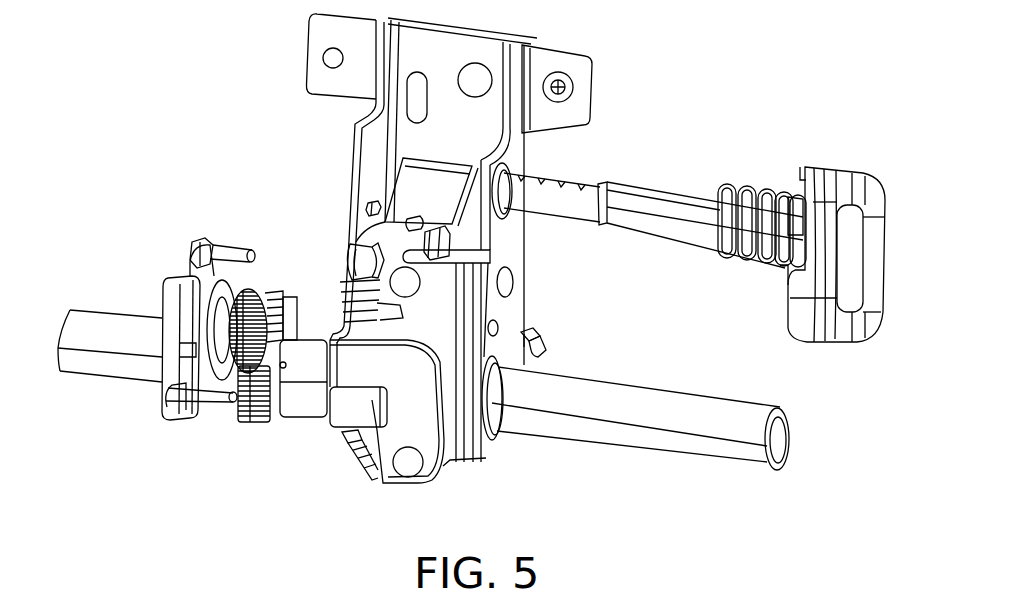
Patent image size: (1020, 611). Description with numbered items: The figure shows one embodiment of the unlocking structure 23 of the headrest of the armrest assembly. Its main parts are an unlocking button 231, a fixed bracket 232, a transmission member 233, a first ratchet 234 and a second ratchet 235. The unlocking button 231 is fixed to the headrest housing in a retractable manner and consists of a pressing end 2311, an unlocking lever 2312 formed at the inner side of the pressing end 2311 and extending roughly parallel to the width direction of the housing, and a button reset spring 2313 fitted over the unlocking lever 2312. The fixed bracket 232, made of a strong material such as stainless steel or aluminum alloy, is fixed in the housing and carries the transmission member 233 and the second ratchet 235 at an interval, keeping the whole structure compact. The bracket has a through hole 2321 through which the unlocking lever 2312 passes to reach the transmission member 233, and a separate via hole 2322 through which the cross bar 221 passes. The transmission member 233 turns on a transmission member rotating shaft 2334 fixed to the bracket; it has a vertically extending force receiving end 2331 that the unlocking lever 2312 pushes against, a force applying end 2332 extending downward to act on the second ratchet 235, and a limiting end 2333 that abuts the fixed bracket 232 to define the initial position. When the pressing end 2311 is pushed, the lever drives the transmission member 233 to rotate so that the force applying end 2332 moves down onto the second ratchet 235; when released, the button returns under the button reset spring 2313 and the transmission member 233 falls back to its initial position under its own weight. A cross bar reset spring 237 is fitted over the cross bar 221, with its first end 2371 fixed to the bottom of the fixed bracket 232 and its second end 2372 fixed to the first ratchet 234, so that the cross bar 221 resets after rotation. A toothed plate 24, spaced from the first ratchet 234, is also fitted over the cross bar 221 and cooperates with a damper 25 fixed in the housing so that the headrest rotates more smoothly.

The unlocking structure 23 is at (628, 148).
The toothed plate 24 is at (268, 397).
The damper 25 is at (184, 341).
The cross bar 221 is at (617, 420).
The unlocking button 231 is at (687, 198).
The fixed bracket 232 is at (488, 96).
The transmission member 233 is at (413, 203).
The first ratchet 234 is at (363, 467).
The second ratchet 235 is at (347, 285).
The cross bar reset spring 237 is at (527, 332).
The pressing end 2311 is at (850, 278).
The unlocking lever 2312 is at (560, 203).
The button reset spring 2313 is at (758, 195).
The through hole 2321 is at (508, 172).
The via hole 2322 is at (498, 437).
The force receiving end 2331 is at (472, 205).
The force applying end 2332 is at (343, 248).
The limiting end 2333 is at (366, 205).
The transmission member rotating shaft 2334 is at (340, 223).
The first end 2371 is at (541, 355).
The second end 2372 is at (350, 427).